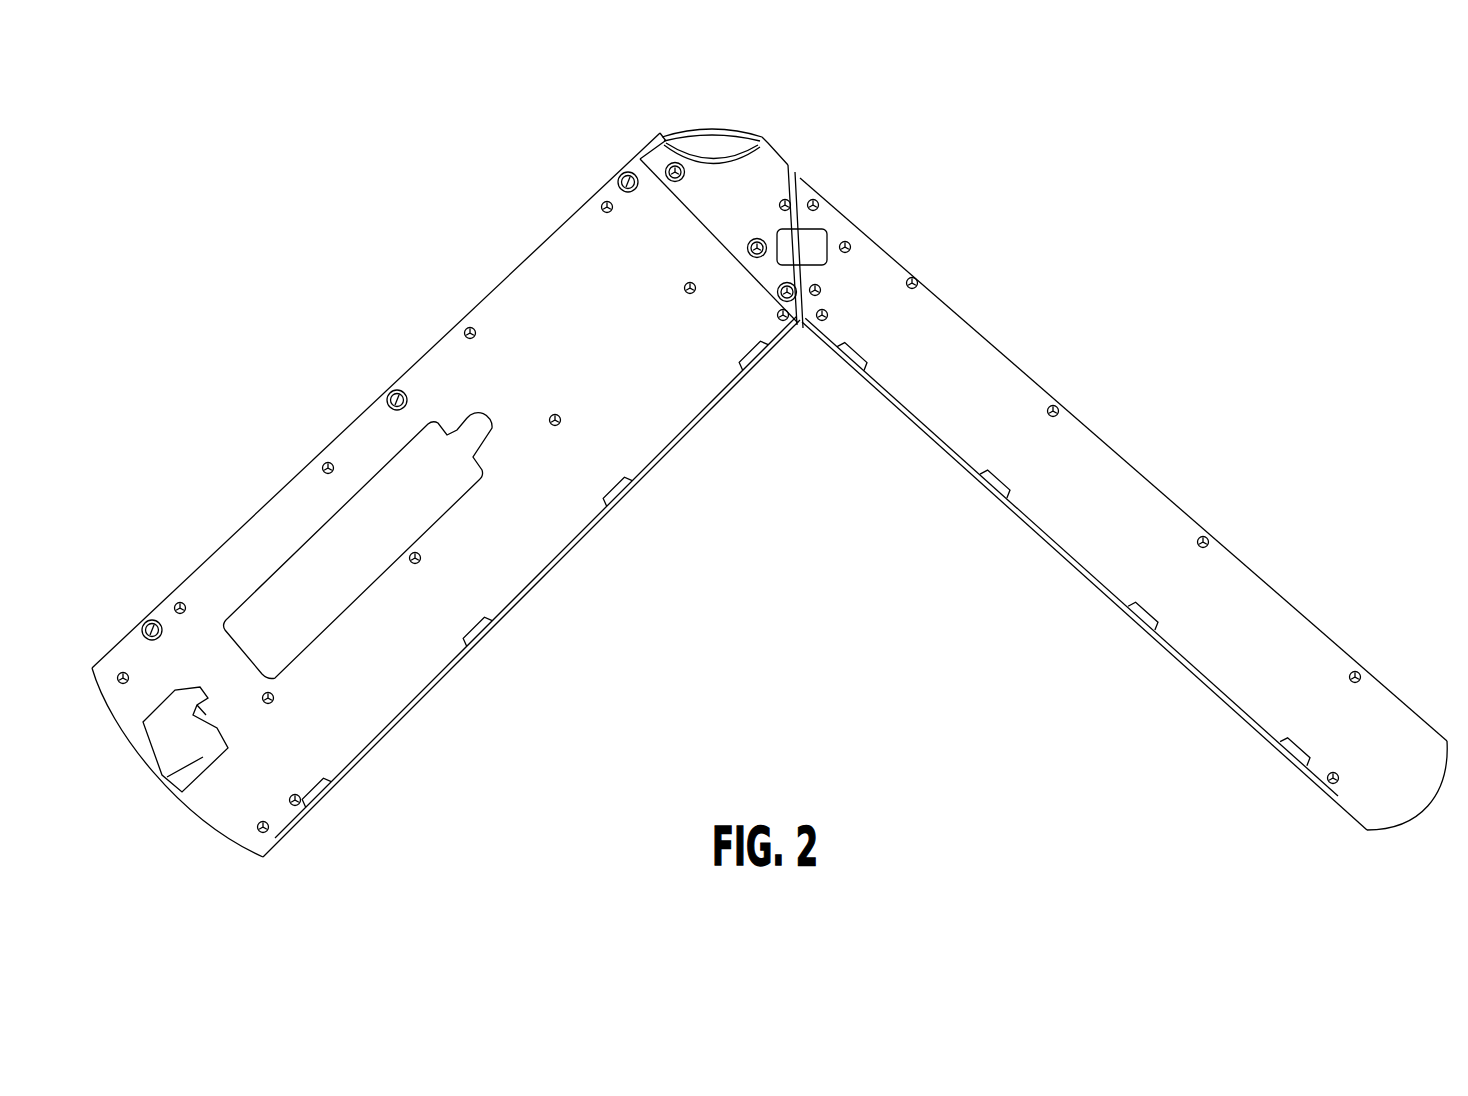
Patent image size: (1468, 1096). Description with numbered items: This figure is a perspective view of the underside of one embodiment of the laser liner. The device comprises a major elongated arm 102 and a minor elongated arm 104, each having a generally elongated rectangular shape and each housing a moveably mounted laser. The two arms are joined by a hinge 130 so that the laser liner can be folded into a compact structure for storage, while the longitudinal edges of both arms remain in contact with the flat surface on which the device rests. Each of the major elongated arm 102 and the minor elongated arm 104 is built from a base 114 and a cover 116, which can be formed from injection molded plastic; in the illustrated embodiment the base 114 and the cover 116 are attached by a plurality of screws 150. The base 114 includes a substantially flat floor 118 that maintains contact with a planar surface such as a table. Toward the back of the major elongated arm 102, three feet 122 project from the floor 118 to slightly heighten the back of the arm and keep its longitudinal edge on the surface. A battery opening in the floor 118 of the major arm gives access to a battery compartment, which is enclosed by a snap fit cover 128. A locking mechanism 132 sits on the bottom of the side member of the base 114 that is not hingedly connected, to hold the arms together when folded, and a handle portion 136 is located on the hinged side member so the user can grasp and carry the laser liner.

The major elongated arm 102 is at (548, 738).
The minor elongated arm 104 is at (1042, 653).
The base 114 is at (635, 413).
The cover 116 is at (593, 530).
The floor 118 is at (395, 677).
The feet 122 is at (630, 172).
The snap fit cover 128 is at (317, 563).
The hinge 130 is at (797, 244).
The locking mechanism 132 is at (167, 742).
The handle portion 136 is at (706, 150).
The screws 150 is at (582, 180).